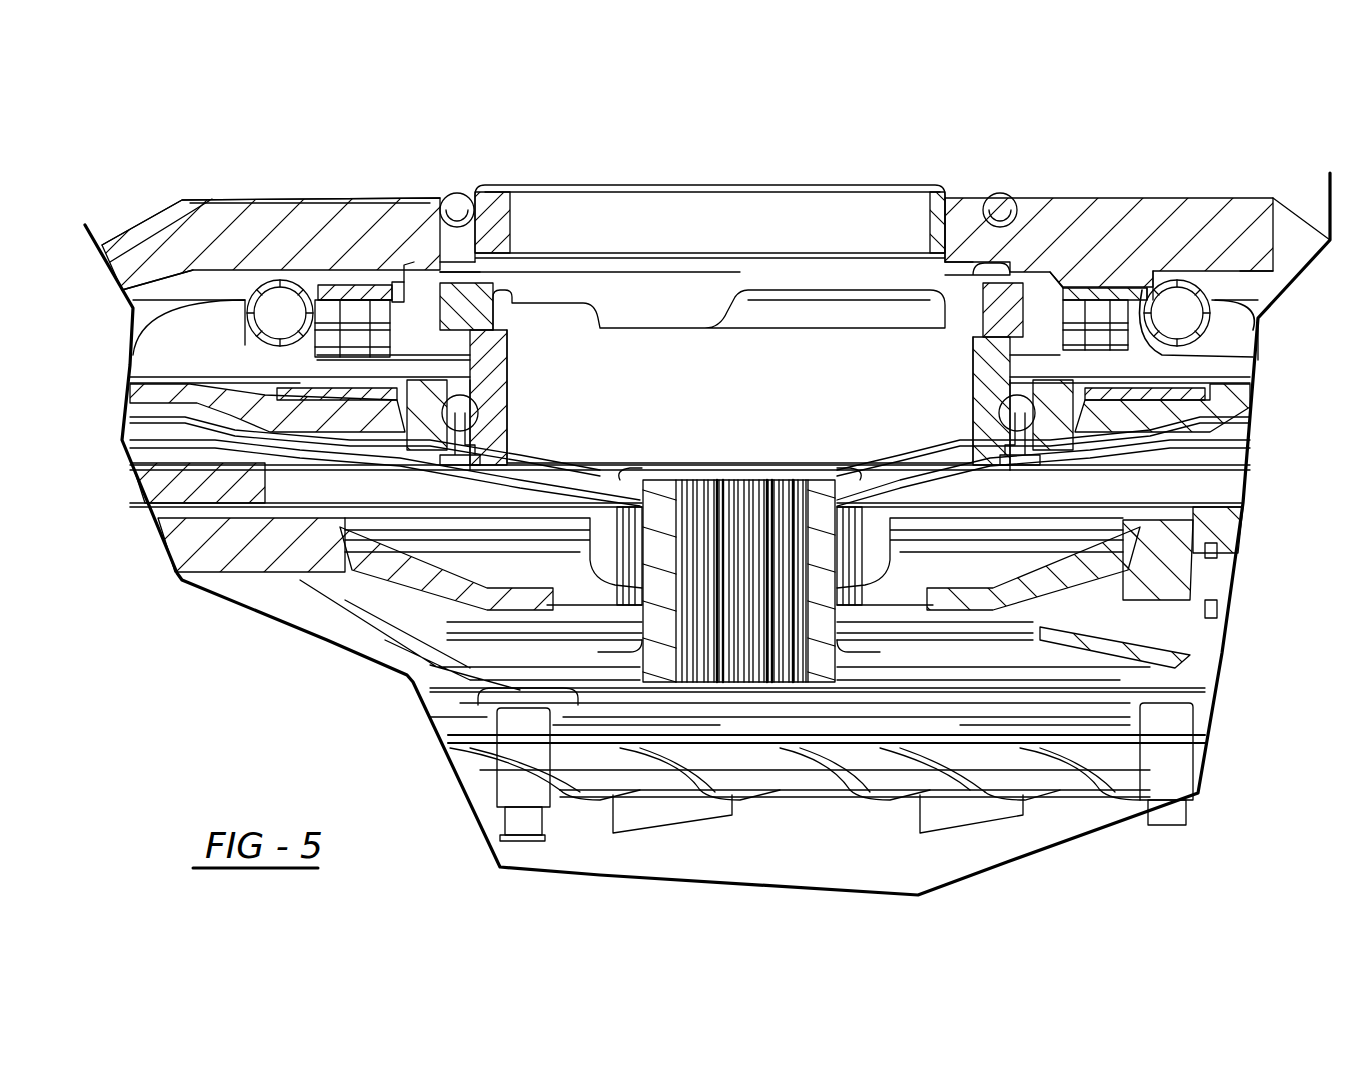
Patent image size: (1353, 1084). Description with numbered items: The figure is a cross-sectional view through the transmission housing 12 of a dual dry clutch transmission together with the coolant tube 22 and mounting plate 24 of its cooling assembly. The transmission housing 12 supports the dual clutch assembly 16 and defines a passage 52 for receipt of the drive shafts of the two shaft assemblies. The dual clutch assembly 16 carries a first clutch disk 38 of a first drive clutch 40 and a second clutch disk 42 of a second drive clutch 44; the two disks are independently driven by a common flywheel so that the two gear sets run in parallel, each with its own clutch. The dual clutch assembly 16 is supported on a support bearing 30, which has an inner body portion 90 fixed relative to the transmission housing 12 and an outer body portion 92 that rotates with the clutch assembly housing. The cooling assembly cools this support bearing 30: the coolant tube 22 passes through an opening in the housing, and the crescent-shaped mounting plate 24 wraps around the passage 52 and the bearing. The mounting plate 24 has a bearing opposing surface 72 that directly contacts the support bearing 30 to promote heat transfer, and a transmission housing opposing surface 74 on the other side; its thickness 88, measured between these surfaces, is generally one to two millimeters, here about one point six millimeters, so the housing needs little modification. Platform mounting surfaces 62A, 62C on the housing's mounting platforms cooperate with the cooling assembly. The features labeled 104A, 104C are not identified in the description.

The transmission housing 12 is at (1177, 228).
The dual clutch assembly 16 is at (1268, 487).
The coolant tube 22 is at (1258, 318).
The mounting plate 24 is at (1107, 282).
The support bearing 30 is at (495, 365).
The first clutch disk 38 is at (330, 612).
The first drive clutch 40 is at (1248, 630).
The second clutch disk 42 is at (300, 548).
The second drive clutch 44 is at (1262, 568).
The passage 52 is at (515, 207).
The platform mounting surface 62A is at (302, 293).
The platform mounting surface 62C is at (1253, 357).
The bearing opposing surface 72 is at (355, 308).
The transmission housing opposing surface 74 is at (336, 282).
The thickness 88 is at (1125, 337).
The inner body portion 90 is at (990, 420).
The outer body portion 92 is at (1060, 410).
The fluid passage 104A is at (373, 286).
The fluid passage 104C is at (1092, 282).